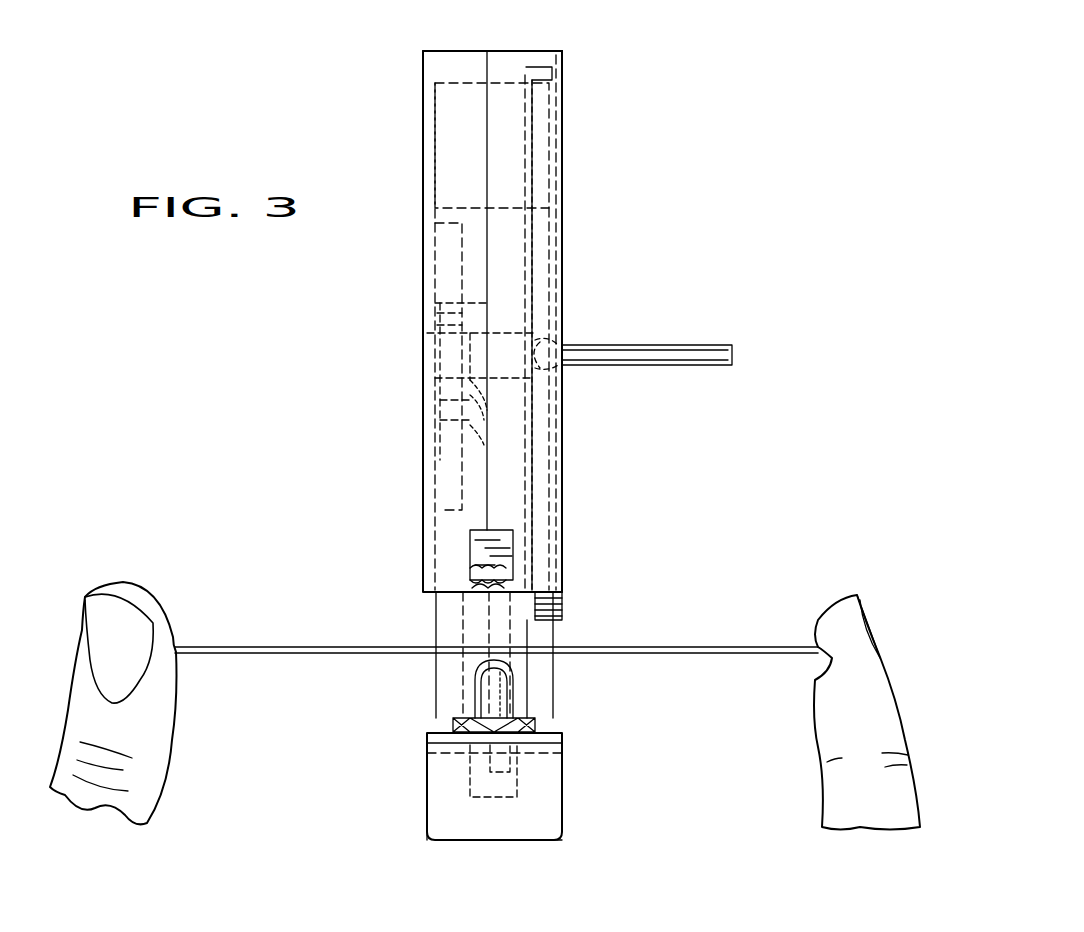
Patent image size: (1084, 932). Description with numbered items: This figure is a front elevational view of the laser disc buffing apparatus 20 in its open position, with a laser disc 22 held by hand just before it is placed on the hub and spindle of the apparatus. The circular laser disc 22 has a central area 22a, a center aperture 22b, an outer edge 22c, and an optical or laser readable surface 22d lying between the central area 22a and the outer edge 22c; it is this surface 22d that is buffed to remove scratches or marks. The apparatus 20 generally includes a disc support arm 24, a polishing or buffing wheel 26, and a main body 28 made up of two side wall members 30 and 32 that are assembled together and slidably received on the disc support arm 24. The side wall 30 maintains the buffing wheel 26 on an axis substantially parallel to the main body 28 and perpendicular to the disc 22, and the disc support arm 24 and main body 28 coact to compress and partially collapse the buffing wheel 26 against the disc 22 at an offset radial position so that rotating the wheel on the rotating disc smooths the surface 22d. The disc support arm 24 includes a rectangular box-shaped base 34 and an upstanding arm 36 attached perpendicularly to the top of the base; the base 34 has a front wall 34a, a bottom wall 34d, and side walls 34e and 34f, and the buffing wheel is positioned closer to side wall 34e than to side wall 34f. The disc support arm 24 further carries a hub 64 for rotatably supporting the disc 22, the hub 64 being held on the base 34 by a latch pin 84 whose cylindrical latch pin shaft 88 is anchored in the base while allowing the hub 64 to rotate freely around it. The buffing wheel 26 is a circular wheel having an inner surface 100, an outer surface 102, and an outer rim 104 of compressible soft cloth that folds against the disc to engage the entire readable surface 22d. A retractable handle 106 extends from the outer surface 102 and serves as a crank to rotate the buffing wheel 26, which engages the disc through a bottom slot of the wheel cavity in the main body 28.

The laser disc buffing apparatus 20 is at (365, 378).
The laser disc 22 is at (738, 655).
The central area 22a is at (578, 645).
The center aperture 22b is at (455, 645).
The outer edge 22c is at (832, 656).
The optical or laser readable surface 22d is at (708, 643).
The disc support arm 24 is at (436, 718).
The buffing wheel 26 is at (562, 528).
The main body 28 is at (562, 47).
The side wall member 30 is at (562, 243).
The side wall member 32 is at (423, 253).
The base 34 is at (562, 838).
The front wall 34a is at (445, 825).
The bottom wall 34d is at (535, 842).
The side wall 34e is at (562, 790).
The side wall 34f is at (428, 795).
The upstanding arm 36 is at (436, 690).
The hub 64 is at (430, 742).
The latch pin 84 is at (513, 693).
The latch pin shaft 88 is at (480, 795).
The inner surface 100 is at (530, 112).
The outer surface 102 is at (562, 98).
The outer rim 104 is at (544, 68).
The retractable handle 106 is at (712, 345).